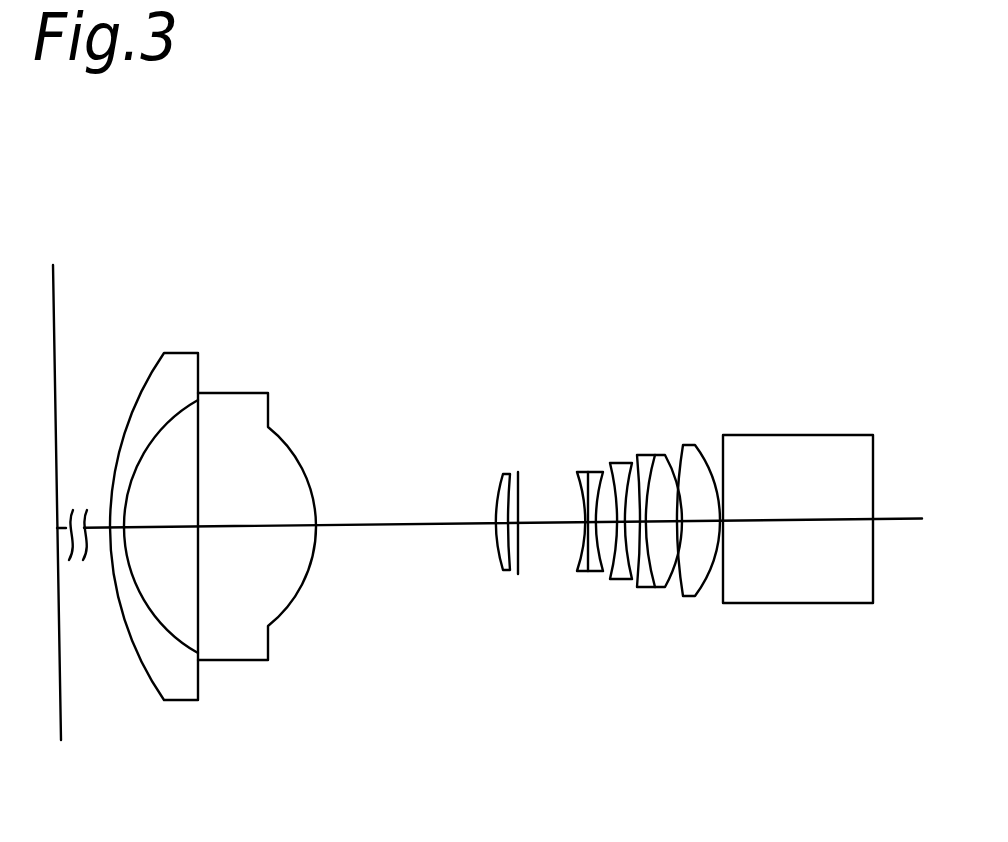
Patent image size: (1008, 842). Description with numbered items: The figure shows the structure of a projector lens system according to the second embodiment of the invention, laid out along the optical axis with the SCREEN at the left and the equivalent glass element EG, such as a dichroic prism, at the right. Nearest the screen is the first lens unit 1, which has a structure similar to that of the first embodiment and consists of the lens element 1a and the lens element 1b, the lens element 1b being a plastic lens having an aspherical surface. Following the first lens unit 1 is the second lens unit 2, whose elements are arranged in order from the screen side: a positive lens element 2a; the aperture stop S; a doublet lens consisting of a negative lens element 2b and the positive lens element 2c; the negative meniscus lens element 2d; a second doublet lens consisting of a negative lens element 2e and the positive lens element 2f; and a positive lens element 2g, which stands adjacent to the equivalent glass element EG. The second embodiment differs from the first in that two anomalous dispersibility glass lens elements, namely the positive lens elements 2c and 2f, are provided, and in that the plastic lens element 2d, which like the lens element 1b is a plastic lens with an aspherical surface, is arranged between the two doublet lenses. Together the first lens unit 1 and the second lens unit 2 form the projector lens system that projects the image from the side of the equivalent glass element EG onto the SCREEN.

The first lens unit 1 is at (213, 562).
The lens element 1a is at (180, 365).
The lens element 1b is at (232, 405).
The second lens unit 2 is at (588, 554).
The positive lens element 2a is at (505, 475).
The negative lens element 2b is at (576, 472).
The positive lens element 2c is at (597, 470).
The negative meniscus lens element 2d is at (618, 465).
The negative lens element 2e is at (643, 457).
The positive lens element 2f is at (657, 455).
The positive lens element 2g is at (692, 445).
The aperture stop S is at (518, 574).
The equivalent glass element EG is at (800, 590).
The screen SCREEN is at (53, 300).